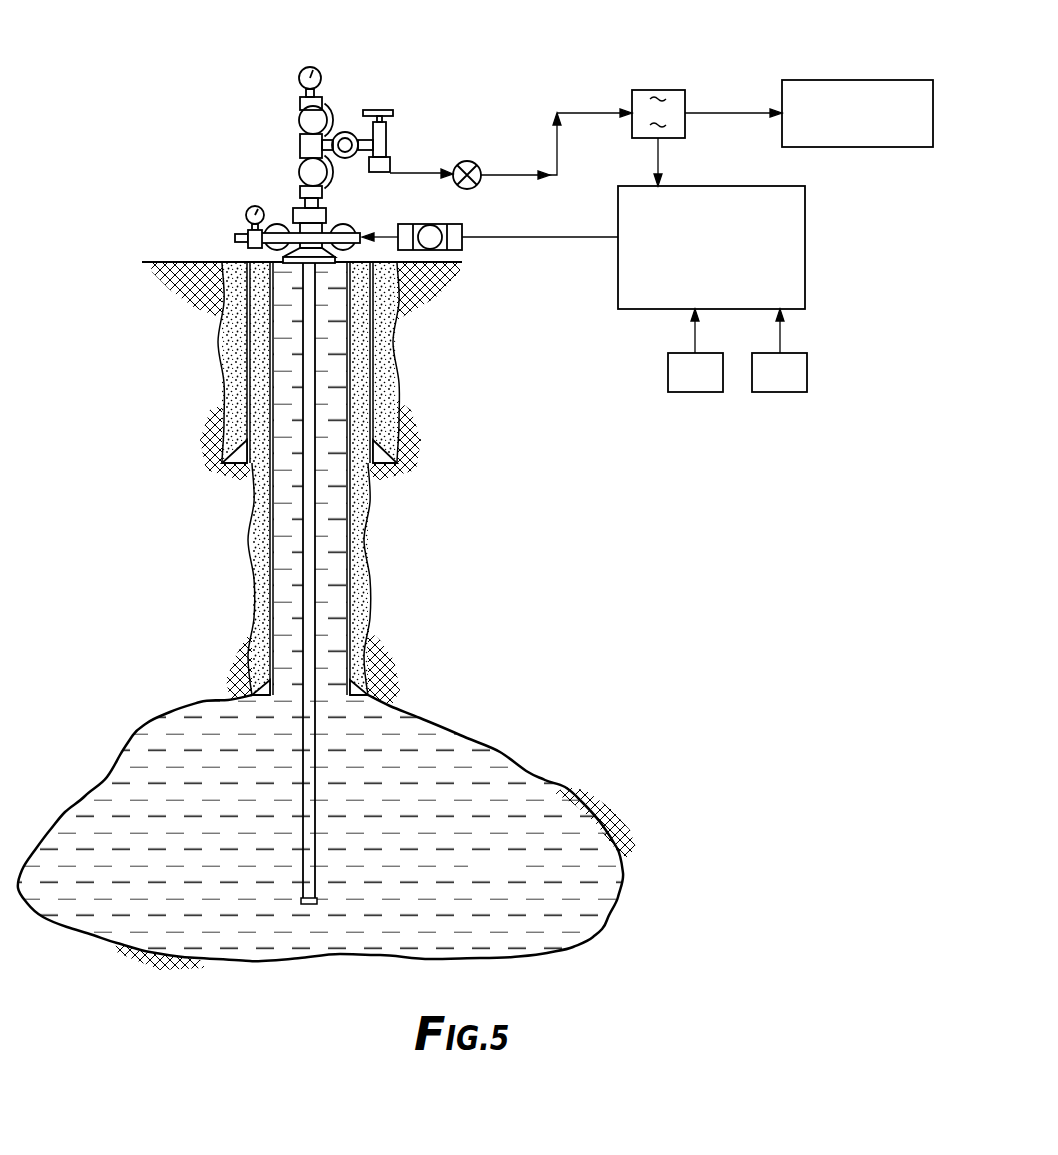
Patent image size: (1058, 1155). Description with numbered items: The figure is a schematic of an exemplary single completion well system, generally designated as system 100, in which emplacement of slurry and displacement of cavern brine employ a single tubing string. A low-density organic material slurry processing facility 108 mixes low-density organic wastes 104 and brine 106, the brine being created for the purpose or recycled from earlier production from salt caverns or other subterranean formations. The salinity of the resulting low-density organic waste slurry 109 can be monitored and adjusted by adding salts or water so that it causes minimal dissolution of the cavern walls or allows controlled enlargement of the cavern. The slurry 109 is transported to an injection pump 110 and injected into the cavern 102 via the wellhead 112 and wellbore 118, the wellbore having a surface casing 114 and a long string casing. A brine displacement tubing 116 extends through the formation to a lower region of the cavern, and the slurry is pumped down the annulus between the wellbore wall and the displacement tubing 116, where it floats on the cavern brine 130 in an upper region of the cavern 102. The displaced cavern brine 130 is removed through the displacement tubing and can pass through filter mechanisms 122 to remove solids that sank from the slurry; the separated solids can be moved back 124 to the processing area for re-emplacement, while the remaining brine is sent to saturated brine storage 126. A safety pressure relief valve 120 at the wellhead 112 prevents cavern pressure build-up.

The system 100 is at (688, 592).
The cavern 102 is at (528, 772).
The low-density organic wastes 104 is at (695, 350).
The brine 106 is at (779, 350).
The low-density organic material slurry processing facility 108 is at (808, 217).
The low-density organic waste slurry 109 is at (570, 238).
The injection pump 110 is at (465, 225).
The wellhead 112 is at (236, 198).
The surface casing 114 is at (397, 340).
The brine displacement tubing 116 is at (312, 538).
The wellbore 118 is at (287, 492).
The safety pressure relief valve 120 is at (463, 160).
The filter mechanisms 122 is at (660, 88).
The separated solids return 124 is at (658, 155).
The saturated brine 126 is at (815, 78).
The cavern brine 130 is at (320, 828).